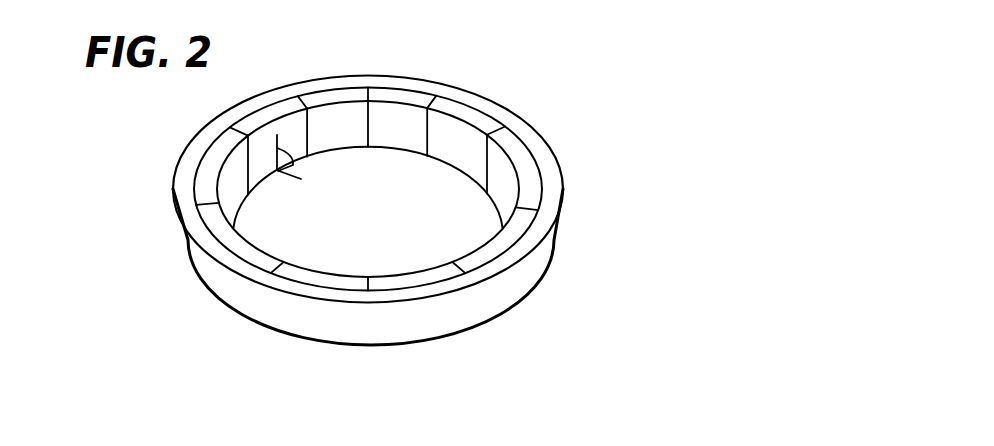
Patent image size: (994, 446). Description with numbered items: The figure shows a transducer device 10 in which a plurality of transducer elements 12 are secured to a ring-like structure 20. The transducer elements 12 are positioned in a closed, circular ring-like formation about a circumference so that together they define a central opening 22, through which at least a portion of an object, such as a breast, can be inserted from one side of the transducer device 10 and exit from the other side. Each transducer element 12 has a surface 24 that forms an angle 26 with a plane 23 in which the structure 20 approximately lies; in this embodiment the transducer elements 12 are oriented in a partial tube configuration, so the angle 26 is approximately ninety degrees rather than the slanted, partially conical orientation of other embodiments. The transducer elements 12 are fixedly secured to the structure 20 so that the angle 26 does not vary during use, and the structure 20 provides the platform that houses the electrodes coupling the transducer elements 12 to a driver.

The transducer device 10 is at (562, 93).
The transducer elements 12 is at (450, 107).
The structure 20 is at (527, 297).
The opening 22 is at (488, 217).
The plane 23 is at (285, 173).
The surface 24 is at (451, 137).
The angle 26 is at (293, 165).